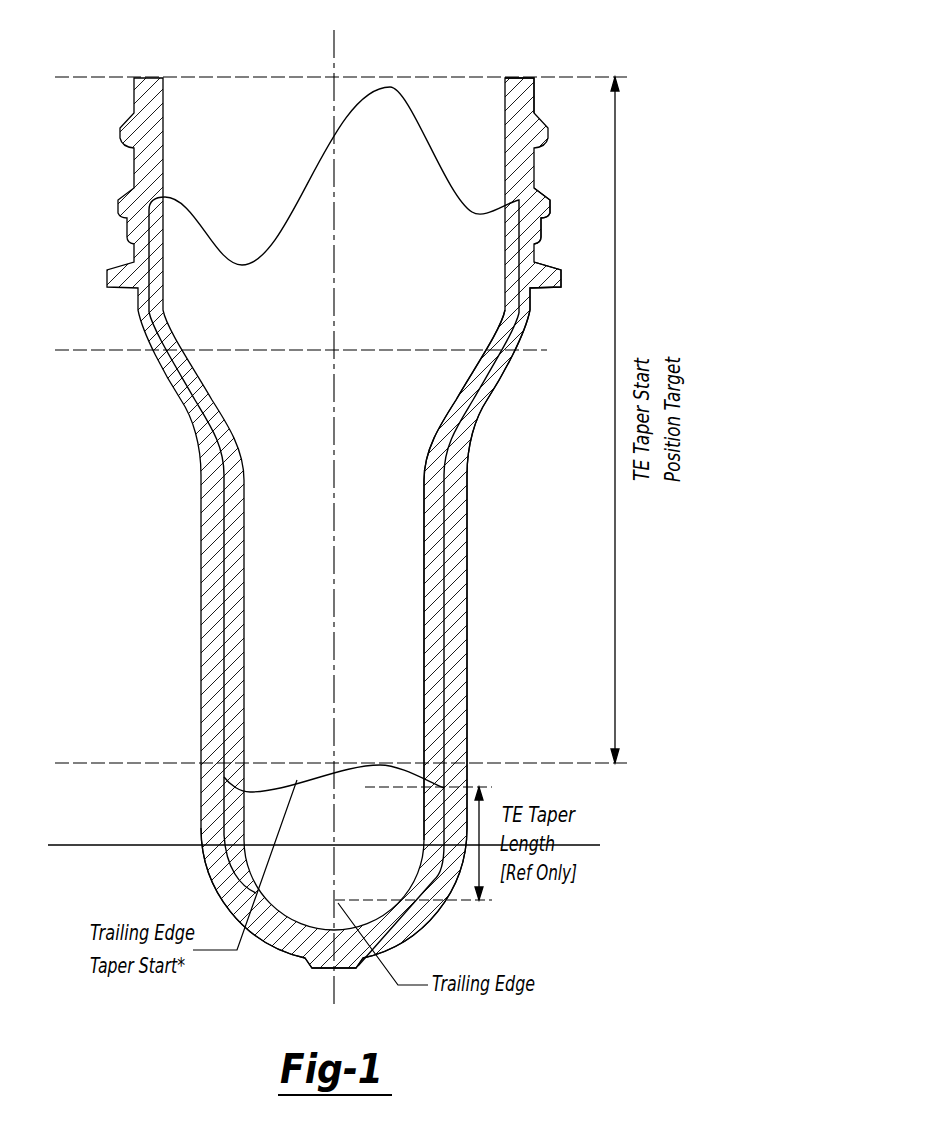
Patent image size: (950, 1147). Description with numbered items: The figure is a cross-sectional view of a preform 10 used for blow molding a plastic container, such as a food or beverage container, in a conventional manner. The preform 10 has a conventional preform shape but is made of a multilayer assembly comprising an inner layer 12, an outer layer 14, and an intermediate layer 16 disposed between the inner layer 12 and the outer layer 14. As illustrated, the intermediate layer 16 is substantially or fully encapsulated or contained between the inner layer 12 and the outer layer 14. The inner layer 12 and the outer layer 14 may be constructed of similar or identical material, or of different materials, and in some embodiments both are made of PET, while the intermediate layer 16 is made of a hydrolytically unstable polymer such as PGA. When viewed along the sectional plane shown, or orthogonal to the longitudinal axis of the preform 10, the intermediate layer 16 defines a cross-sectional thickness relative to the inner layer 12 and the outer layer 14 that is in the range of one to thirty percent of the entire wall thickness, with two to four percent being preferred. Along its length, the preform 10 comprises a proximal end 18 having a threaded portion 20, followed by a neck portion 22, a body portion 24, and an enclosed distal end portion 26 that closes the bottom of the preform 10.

The preform 10 is at (658, 183).
The inner layer 12 is at (432, 455).
The outer layer 14 is at (467, 477).
The intermediate layer 16 is at (424, 598).
The proximal end 18 is at (536, 112).
The threaded portion 20 is at (546, 137).
The neck portion 22 is at (528, 313).
The body portion 24 is at (467, 620).
The enclosed distal end portion 26 is at (428, 924).